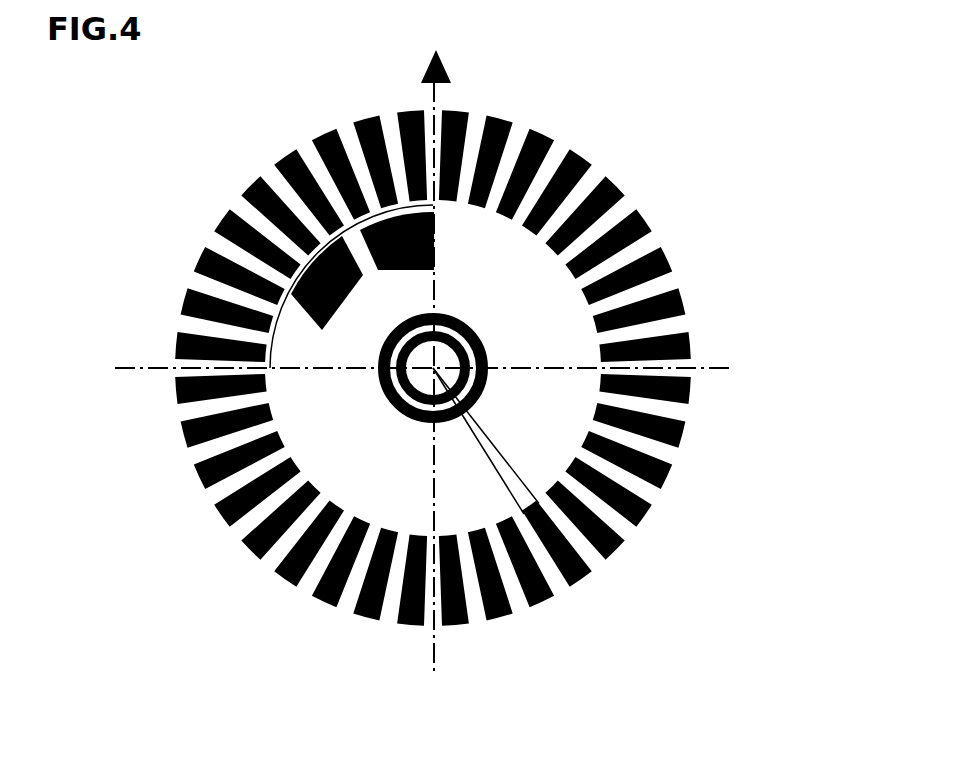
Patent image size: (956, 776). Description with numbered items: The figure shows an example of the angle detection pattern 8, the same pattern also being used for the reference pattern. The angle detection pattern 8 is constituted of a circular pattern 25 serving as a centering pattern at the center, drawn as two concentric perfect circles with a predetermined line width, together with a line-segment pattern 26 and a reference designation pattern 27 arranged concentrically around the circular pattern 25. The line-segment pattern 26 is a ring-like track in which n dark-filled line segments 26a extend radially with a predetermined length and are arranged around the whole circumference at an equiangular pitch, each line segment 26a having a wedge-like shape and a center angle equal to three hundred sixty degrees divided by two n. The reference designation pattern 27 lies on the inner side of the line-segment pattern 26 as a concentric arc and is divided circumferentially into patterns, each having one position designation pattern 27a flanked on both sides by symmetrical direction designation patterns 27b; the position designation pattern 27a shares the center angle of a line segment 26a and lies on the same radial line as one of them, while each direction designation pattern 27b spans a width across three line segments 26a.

The angle detection pattern 8 is at (423, 361).
The circular pattern 25 is at (492, 340).
The line-segment pattern 26 is at (446, 353).
The line segment 26a is at (287, 150).
The reference designation pattern 27 is at (410, 343).
The position designation pattern 27a is at (372, 278).
The direction designation pattern 27b is at (410, 266).